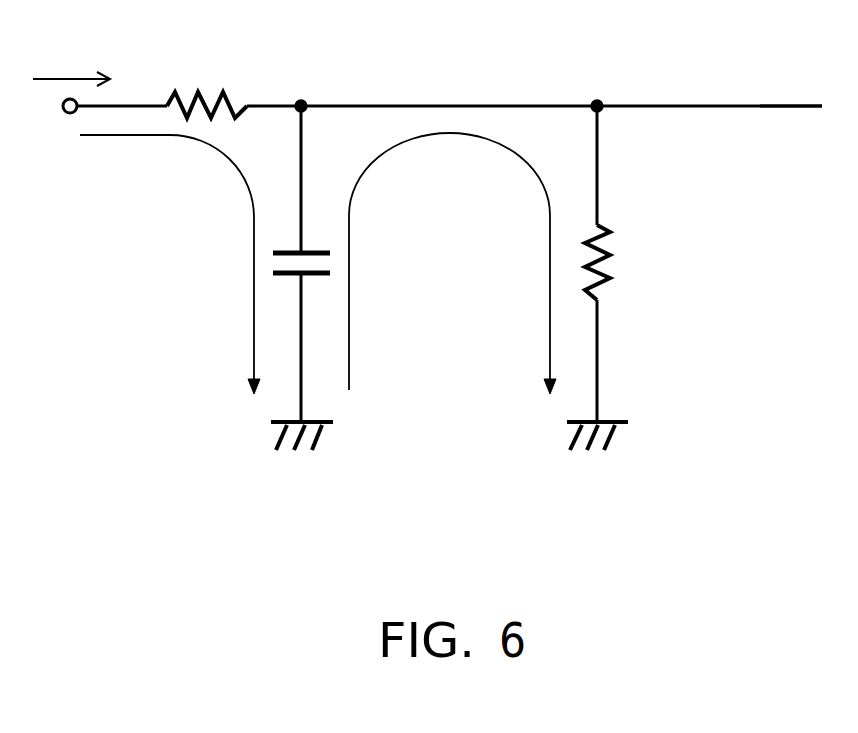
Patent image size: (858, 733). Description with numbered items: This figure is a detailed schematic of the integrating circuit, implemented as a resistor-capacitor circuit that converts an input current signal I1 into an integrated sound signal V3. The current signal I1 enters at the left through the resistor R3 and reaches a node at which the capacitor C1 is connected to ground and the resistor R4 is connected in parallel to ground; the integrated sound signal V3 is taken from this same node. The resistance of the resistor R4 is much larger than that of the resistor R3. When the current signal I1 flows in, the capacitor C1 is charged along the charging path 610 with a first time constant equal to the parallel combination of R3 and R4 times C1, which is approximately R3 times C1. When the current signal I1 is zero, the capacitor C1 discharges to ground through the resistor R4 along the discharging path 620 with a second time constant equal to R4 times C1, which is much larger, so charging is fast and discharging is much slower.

The current signal I1 is at (71, 61).
The resistor R3 is at (211, 92).
The integrated sound signal V3 is at (791, 85).
The capacitor C1 is at (317, 247).
The resistor R4 is at (610, 270).
The charging path 610 is at (254, 272).
The discharging path 620 is at (550, 272).